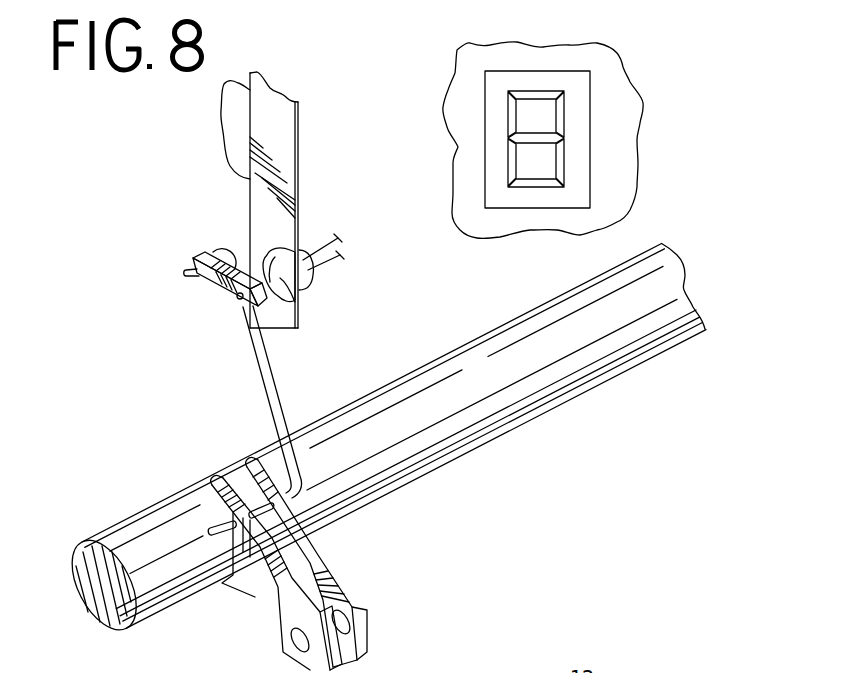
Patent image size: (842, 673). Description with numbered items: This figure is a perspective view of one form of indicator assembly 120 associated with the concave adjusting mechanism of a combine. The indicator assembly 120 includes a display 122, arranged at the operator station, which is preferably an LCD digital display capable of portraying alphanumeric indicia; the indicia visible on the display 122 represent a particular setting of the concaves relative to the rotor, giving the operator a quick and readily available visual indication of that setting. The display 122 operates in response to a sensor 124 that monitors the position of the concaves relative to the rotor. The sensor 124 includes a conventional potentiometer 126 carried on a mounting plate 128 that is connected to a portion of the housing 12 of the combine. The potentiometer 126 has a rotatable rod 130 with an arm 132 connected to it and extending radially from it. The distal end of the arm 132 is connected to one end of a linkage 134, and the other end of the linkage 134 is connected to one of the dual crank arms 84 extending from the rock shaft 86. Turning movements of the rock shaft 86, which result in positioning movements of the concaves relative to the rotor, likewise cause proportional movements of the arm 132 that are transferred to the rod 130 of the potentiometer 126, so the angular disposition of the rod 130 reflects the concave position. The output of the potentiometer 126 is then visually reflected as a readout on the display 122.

The housing 12 is at (238, 127).
The crank arm 84 is at (287, 618).
The rock shaft 86 is at (453, 402).
The indicator assembly 120 is at (410, 78).
The display 122 is at (590, 147).
The sensor 124 is at (306, 297).
The potentiometer 126 is at (305, 285).
The mounting plate 128 is at (283, 157).
The rotatable rod 130 is at (297, 315).
The arm 132 is at (217, 288).
The linkage 134 is at (260, 403).